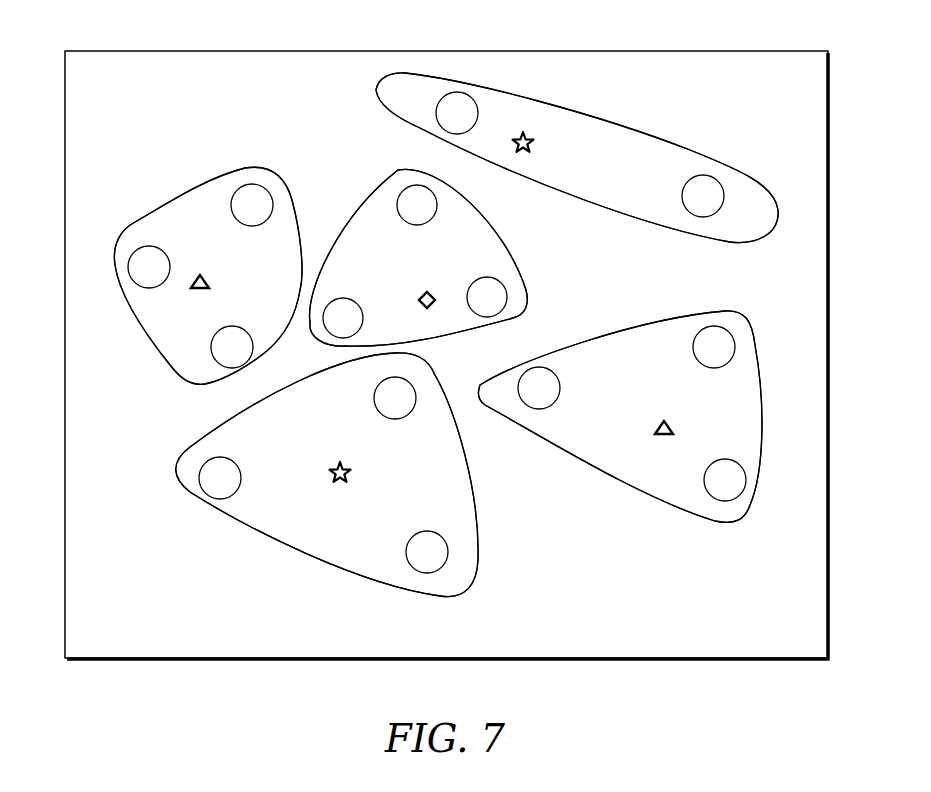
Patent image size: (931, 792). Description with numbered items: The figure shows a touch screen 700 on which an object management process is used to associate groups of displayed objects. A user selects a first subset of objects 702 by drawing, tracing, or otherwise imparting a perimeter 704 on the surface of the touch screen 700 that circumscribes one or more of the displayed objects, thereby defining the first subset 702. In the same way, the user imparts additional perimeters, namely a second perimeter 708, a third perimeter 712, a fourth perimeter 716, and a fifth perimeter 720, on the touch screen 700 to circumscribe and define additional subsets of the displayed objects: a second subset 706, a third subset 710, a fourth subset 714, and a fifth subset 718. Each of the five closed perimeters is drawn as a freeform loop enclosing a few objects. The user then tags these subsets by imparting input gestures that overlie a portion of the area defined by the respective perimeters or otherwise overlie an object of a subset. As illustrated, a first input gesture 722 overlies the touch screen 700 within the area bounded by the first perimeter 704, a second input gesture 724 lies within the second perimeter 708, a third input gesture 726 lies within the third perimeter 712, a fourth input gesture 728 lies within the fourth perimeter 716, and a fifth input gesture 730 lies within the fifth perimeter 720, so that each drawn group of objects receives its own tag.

The touch screen 700 is at (100, 50).
The first subset of objects 702 is at (184, 209).
The perimeter 704 is at (140, 222).
The second subset of objects 706 is at (284, 531).
The second perimeter 708 is at (193, 445).
The third subset of objects 710 is at (365, 231).
The third perimeter 712 is at (500, 240).
The fourth subset of objects 714 is at (617, 136).
The fourth perimeter 716 is at (708, 158).
The fifth subset of objects 718 is at (625, 476).
The fifth perimeter 720 is at (665, 322).
The first input gesture 722 is at (210, 284).
The second input gesture 724 is at (348, 466).
The third input gesture 726 is at (420, 293).
The fourth input gesture 728 is at (533, 136).
The fifth input gesture 730 is at (682, 411).